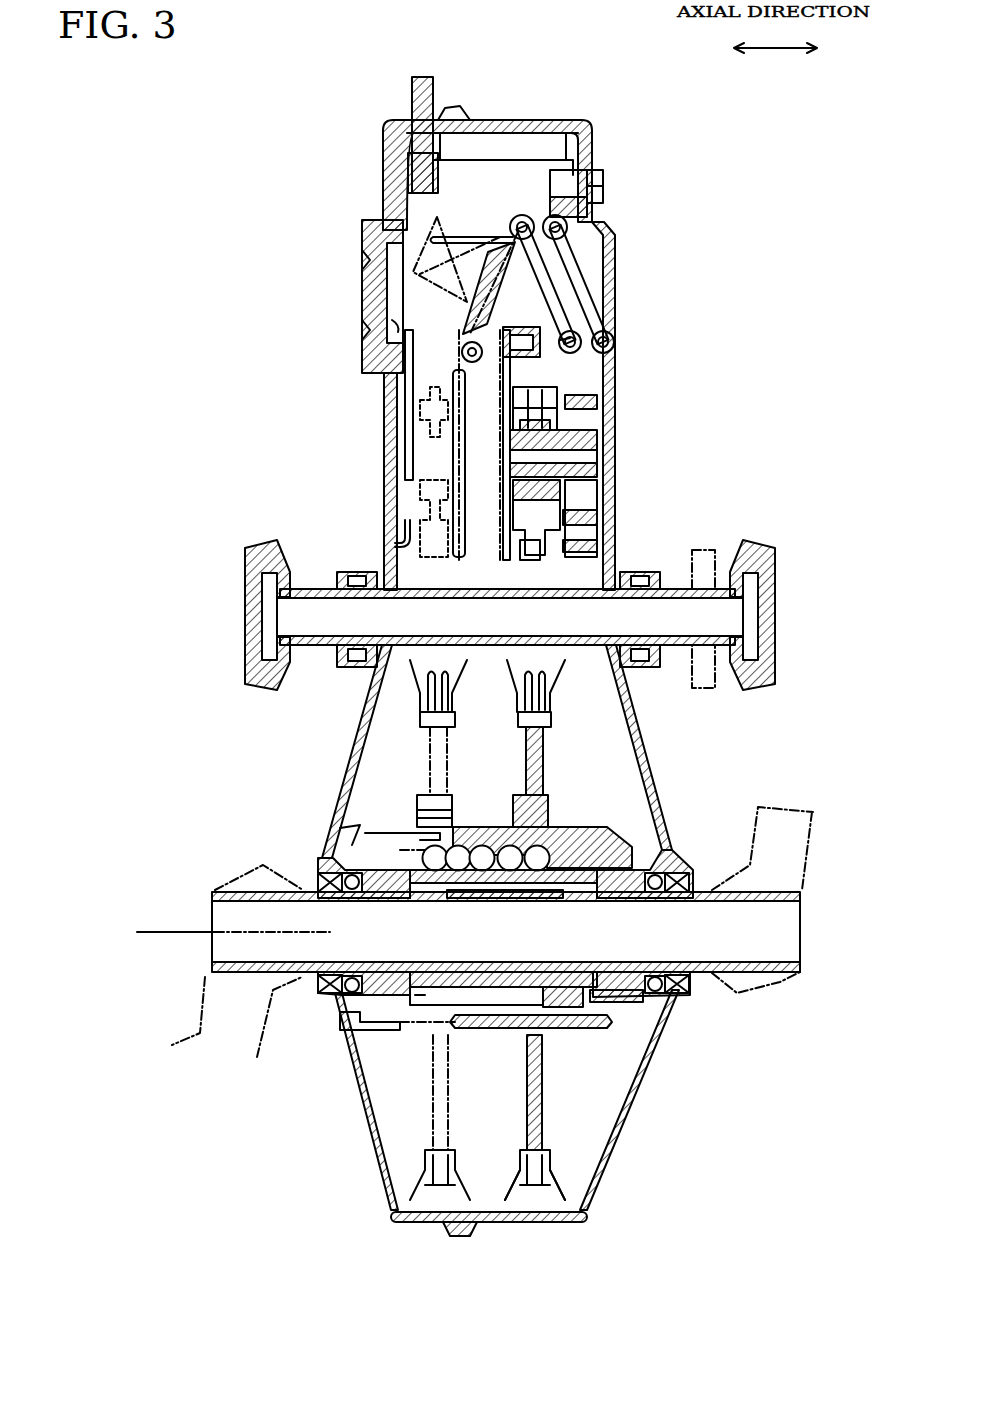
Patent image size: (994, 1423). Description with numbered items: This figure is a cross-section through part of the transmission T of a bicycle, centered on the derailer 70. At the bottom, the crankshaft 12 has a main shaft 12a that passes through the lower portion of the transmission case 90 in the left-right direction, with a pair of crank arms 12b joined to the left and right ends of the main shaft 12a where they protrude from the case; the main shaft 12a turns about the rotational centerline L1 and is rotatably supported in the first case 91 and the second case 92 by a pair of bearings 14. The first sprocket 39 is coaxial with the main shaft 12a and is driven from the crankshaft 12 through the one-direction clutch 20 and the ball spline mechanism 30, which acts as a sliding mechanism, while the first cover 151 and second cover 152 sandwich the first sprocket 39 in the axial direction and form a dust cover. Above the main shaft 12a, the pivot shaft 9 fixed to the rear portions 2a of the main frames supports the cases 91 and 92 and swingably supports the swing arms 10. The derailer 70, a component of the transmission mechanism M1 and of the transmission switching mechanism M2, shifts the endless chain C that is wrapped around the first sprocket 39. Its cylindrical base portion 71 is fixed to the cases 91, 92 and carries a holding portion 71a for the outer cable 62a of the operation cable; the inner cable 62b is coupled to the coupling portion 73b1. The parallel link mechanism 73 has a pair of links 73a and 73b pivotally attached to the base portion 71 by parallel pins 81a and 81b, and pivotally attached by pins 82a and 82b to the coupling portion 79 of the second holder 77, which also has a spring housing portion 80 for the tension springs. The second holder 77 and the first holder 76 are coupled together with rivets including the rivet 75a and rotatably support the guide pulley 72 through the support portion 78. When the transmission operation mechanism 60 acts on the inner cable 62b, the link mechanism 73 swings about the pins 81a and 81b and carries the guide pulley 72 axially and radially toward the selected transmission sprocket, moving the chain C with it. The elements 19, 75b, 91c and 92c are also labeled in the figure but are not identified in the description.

The transmission T is at (311, 88).
The transmission operation mechanism 60 is at (472, 73).
The outer cable 62a is at (412, 88).
The inner cable 62b is at (385, 222).
The base portion 71 is at (600, 122).
The holding portion 71a is at (500, 133).
The pin 81a is at (605, 218).
The pin 81b is at (512, 218).
The derailer 70 is at (623, 250).
The parallel link mechanism 73 is at (623, 280).
The link 73a is at (614, 306).
The link 73b is at (614, 332).
The coupling portion 73b1 is at (385, 308).
The pin 82a is at (580, 340).
The pin 82b is at (585, 365).
The transmission switching mechanism M2 is at (400, 332).
The coupling portion 79 is at (563, 353).
The spring housing portion 80 is at (545, 385).
The second holder 77 is at (718, 343).
The rivet 75a is at (565, 448).
The side rod 75b is at (410, 380).
The support portion 78 is at (565, 425).
The first holder 76 is at (430, 430).
The guide pulley 72 is at (578, 522).
The chain C is at (528, 558).
The rear portions 2a is at (272, 548).
The swing arms 10 is at (352, 572).
The pivot shaft 9 is at (322, 622).
The bracket 19 is at (718, 668).
The transmission mechanism M1 is at (596, 740).
The fork 91c is at (421, 700).
The fork 92c is at (514, 700).
The first sprocket 39 is at (430, 760).
The one-direction clutch 20 is at (640, 840).
The ball spline mechanism 30 is at (398, 860).
The crankshaft 12 is at (836, 889).
The main shaft 12a is at (720, 955).
The crank arms 12b is at (818, 814).
The rotational centerline L1 is at (160, 940).
The bearings 14 is at (312, 1000).
The first cover 151 is at (395, 1035).
The second cover 152 is at (580, 1040).
The first case 91 is at (420, 1222).
The second case 92 is at (505, 1222).
The transmission case 90 is at (545, 1295).